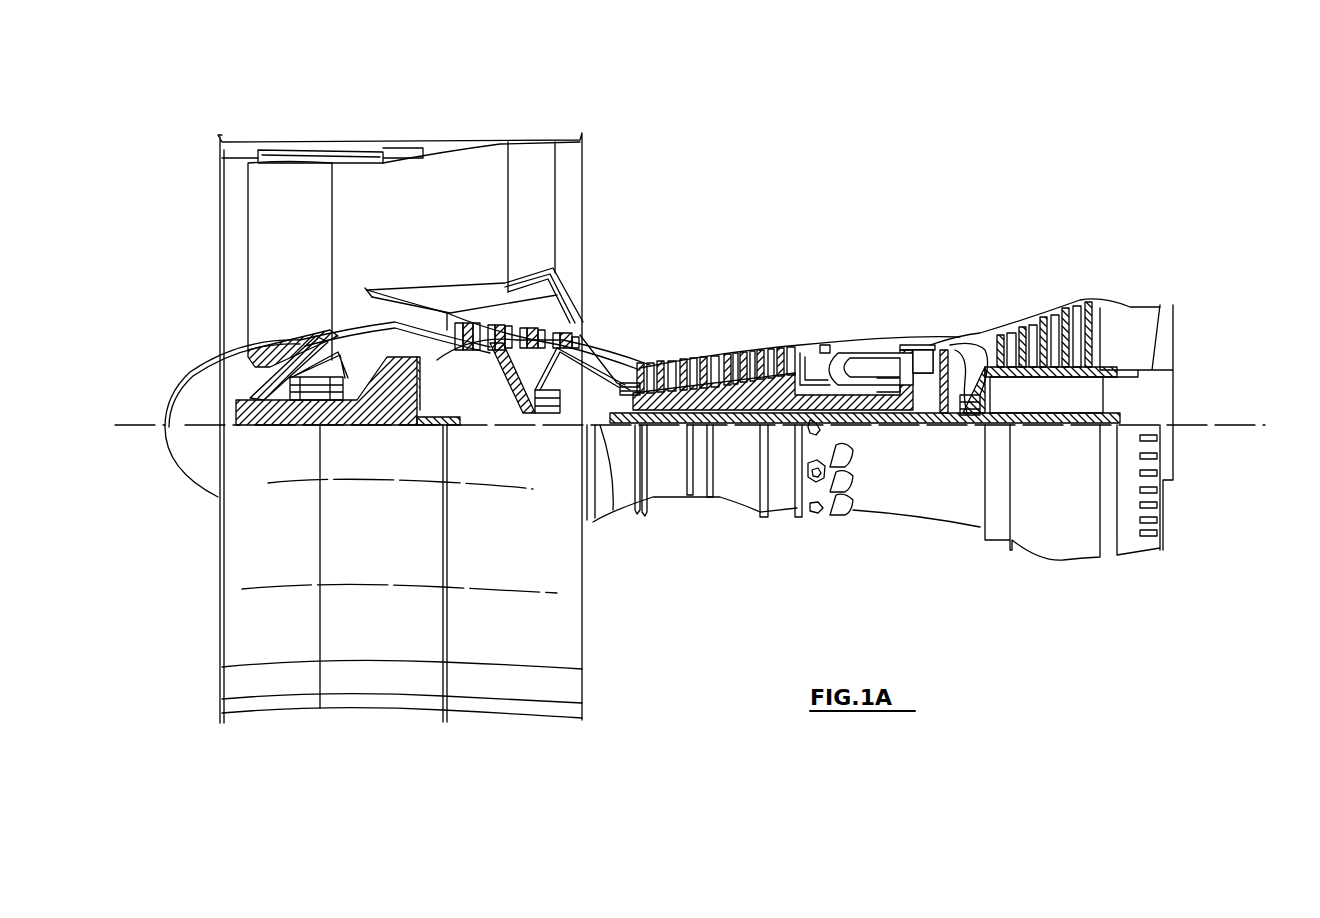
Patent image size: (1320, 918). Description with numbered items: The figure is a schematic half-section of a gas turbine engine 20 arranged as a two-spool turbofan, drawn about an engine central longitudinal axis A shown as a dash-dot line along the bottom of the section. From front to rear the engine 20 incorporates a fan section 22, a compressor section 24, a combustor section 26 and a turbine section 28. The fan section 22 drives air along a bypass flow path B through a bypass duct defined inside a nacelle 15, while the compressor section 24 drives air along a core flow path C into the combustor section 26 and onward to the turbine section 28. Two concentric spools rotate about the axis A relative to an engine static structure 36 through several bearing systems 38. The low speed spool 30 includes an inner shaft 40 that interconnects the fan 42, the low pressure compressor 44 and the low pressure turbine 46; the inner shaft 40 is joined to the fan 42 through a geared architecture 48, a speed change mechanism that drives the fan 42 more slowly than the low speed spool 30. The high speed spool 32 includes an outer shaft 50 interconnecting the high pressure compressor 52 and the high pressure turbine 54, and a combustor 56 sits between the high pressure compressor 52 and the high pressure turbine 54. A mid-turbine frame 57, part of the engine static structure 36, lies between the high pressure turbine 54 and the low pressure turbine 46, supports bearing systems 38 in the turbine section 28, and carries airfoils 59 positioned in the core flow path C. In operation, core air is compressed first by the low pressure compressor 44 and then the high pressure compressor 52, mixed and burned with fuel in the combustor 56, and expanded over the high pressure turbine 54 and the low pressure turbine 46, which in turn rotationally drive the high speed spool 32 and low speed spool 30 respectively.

The nacelle 15 is at (403, 142).
The gas turbine engine 20 is at (862, 190).
The fan section 22 is at (330, 130).
The compressor section 24 is at (630, 330).
The combustor section 26 is at (852, 316).
The turbine section 28 is at (1002, 282).
The low speed spool 30 is at (740, 430).
The high speed spool 32 is at (785, 390).
The engine static structure 36 is at (780, 512).
The bearing systems 38 is at (540, 420).
The inner shaft 40 is at (600, 500).
The fan 42 is at (305, 269).
The low pressure compressor 44 is at (497, 345).
The low pressure turbine 46 is at (1050, 318).
The geared architecture 48 is at (410, 405).
The outer shaft 50 is at (850, 425).
The high pressure compressor 52 is at (715, 390).
The high pressure turbine 54 is at (920, 345).
The combustor 56 is at (855, 365).
The mid-turbine frame 57 is at (963, 333).
The airfoils 59 is at (990, 385).
The engine central longitudinal axis A is at (1250, 425).
The bypass flow path B is at (368, 215).
The core flow path C is at (405, 322).